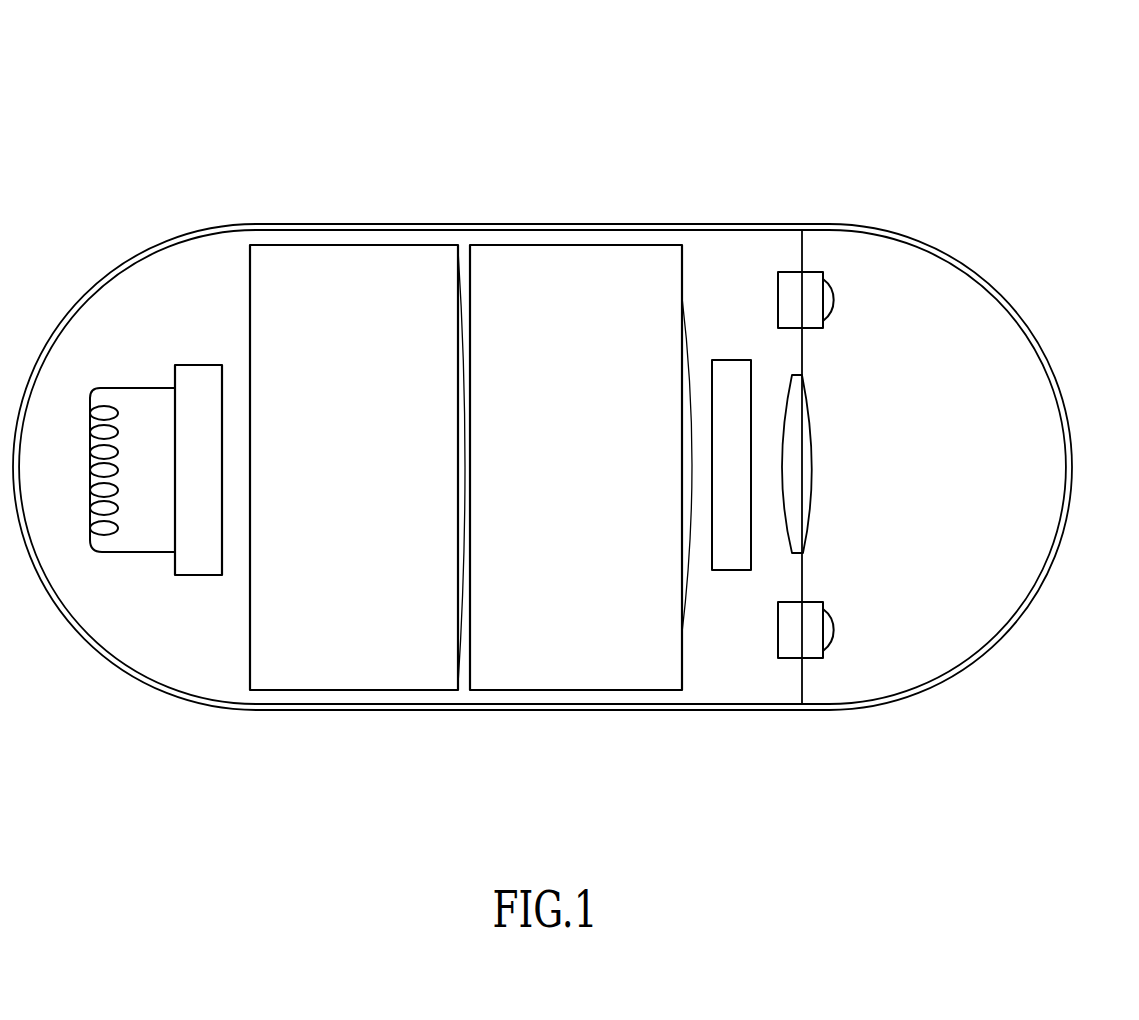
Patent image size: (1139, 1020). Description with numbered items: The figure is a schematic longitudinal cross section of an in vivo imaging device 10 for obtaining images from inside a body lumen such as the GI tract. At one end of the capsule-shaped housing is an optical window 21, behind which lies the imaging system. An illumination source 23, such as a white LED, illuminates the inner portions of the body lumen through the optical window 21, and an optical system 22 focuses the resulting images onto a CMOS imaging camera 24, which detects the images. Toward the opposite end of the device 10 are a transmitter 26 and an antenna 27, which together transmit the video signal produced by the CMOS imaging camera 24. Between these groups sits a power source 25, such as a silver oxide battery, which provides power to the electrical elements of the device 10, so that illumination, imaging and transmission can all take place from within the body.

The device 10 is at (558, 178).
The optical window 21 is at (1037, 397).
The optical system 22 is at (812, 478).
The illumination source 23 is at (835, 305).
The CMOS imaging camera 24 is at (733, 572).
The power source 25 is at (337, 471).
The transmitter 26 is at (200, 390).
The antenna 27 is at (119, 489).